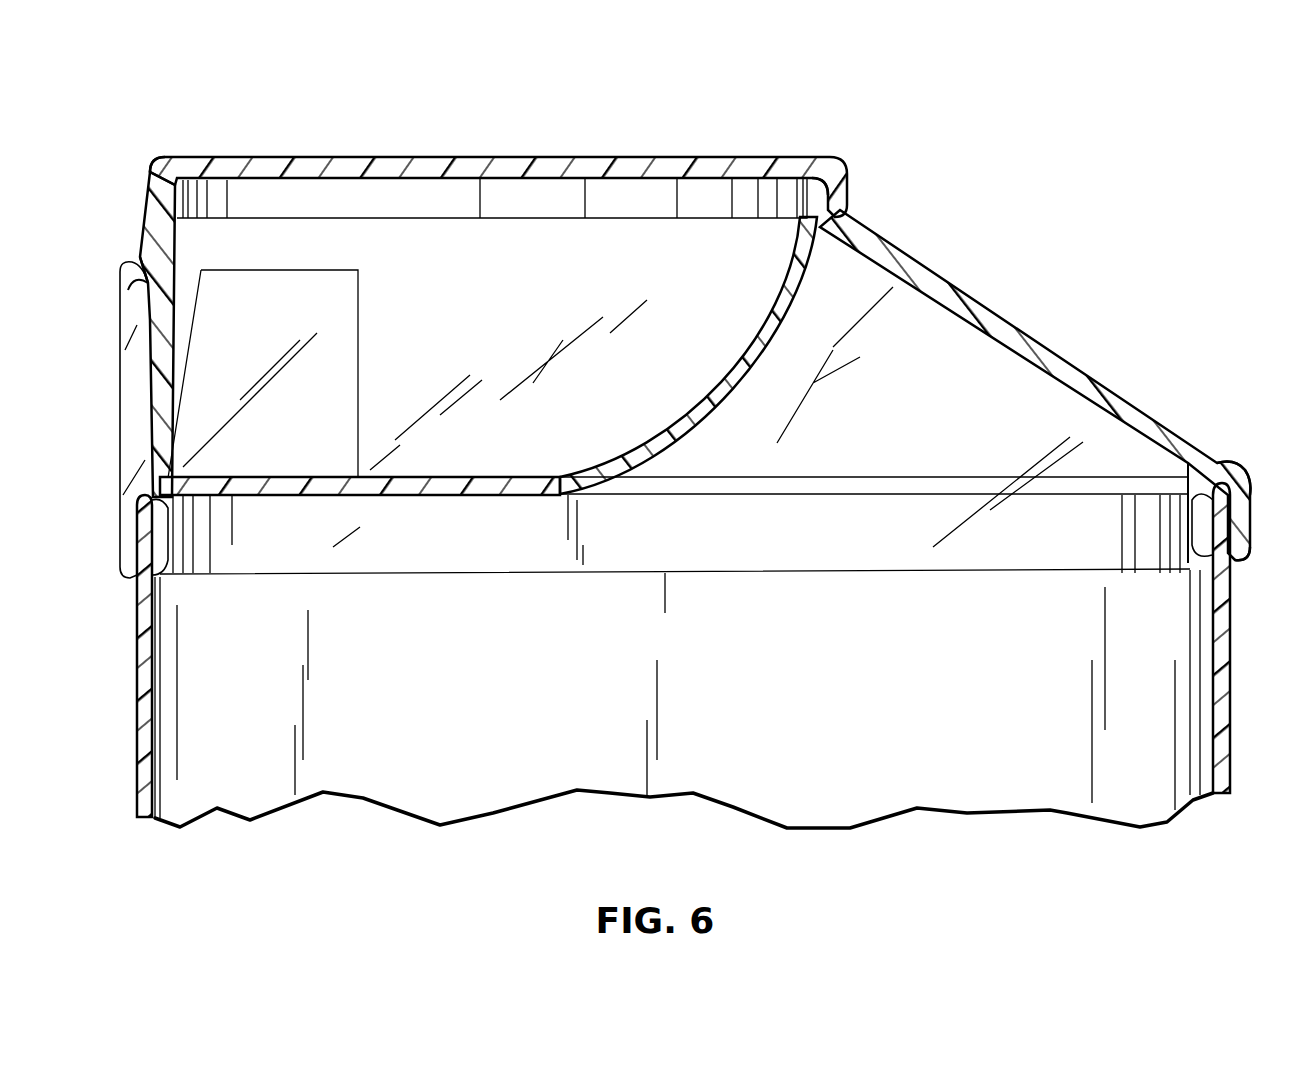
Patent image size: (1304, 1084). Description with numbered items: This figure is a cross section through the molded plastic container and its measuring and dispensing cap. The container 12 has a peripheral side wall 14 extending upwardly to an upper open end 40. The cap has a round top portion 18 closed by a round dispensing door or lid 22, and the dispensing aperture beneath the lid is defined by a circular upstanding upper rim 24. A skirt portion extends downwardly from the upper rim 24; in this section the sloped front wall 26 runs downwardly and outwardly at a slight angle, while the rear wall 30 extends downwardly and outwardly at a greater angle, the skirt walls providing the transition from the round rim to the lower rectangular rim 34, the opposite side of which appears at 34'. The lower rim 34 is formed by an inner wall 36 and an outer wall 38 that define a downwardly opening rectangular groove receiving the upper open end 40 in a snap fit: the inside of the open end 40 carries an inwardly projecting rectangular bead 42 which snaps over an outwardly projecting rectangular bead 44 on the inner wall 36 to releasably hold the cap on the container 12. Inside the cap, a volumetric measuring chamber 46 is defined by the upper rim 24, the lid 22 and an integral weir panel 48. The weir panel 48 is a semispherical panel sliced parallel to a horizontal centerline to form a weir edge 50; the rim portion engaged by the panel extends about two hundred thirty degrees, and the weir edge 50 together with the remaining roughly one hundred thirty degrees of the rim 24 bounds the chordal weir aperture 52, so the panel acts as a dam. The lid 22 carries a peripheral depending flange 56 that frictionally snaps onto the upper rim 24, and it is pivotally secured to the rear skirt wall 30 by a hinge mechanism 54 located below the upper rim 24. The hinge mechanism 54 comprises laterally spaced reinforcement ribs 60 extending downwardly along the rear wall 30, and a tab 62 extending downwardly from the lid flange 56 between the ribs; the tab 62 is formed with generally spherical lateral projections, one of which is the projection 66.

The container 12 is at (130, 745).
The peripheral side wall 14 is at (1230, 687).
The round top portion 18 is at (148, 158).
The dispensing door 22 is at (495, 157).
The upper rim 24 is at (207, 202).
The front wall 26 is at (1040, 345).
The rear wall 30 is at (125, 288).
The lower rim 34 is at (1259, 470).
The lid skirt corner 34' is at (98, 533).
The inner wall 36 is at (1190, 507).
The outer wall 38 is at (1245, 550).
The upper open end 40 is at (1250, 518).
The inwardly projecting rectangular bead 42 is at (170, 530).
The outwardly projecting rectangular bead 44 is at (137, 567).
The measuring chamber 46 is at (610, 237).
The weir panel 48 is at (573, 474).
The weir edge 50 is at (357, 492).
The weir aperture 52 is at (290, 478).
The hinge mechanism 54 is at (137, 258).
The peripheral depending flange 56 is at (847, 192).
The reinforcement rib 60 is at (133, 422).
The tab 62 is at (150, 183).
The lateral extending projection 66 is at (168, 280).